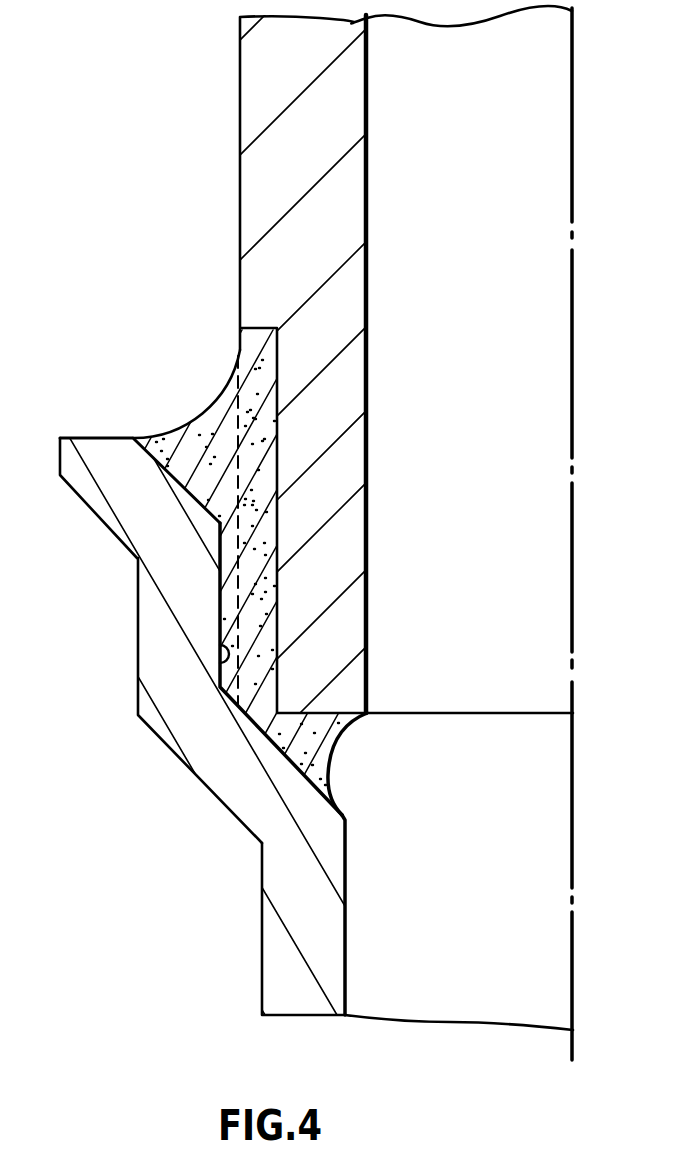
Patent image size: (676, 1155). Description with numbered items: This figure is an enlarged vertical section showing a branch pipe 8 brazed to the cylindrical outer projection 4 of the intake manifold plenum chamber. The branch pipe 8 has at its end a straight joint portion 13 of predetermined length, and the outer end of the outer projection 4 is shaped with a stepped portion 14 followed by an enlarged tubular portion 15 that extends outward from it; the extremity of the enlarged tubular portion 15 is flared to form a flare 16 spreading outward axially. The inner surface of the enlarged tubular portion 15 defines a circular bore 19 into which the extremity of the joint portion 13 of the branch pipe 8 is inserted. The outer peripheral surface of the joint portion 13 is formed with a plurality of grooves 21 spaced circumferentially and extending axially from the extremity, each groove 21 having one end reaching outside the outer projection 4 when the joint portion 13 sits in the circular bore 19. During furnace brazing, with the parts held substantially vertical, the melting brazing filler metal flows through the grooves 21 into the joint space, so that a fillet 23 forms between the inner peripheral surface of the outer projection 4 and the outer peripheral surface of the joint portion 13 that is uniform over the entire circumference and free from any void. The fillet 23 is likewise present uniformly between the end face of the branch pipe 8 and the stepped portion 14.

The outer projection 4 is at (280, 948).
The branch pipe 8 is at (252, 90).
The joint portion 13 is at (368, 498).
The stepped portion 14 is at (292, 765).
The enlarged tubular portion 15 is at (155, 635).
The flare 16 is at (117, 493).
The circular bore 19 is at (228, 658).
The groove 21 is at (277, 516).
The fillet 23 is at (190, 427).